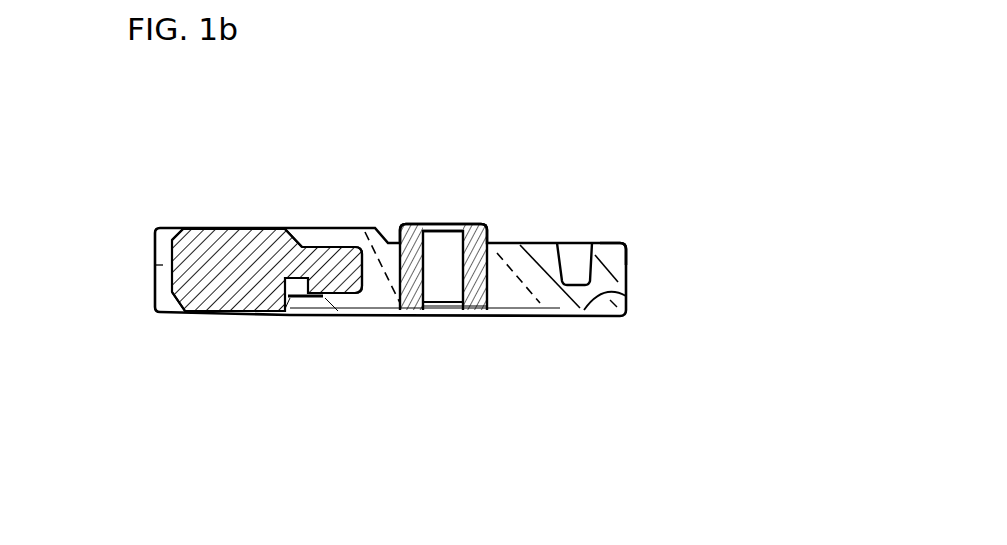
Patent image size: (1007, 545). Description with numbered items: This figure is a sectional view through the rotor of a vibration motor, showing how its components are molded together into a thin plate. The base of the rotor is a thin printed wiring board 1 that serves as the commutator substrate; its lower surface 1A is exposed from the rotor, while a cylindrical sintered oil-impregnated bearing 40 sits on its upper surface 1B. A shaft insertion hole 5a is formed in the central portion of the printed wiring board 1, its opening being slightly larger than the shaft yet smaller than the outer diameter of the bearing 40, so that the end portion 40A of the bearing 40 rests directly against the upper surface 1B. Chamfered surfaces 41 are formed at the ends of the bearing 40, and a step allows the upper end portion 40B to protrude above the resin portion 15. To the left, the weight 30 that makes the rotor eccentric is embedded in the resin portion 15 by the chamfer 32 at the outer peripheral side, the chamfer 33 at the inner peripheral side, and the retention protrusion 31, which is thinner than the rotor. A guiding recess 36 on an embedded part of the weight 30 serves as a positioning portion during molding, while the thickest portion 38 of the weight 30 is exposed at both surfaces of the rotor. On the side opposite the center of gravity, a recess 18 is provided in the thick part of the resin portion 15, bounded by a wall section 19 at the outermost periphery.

The printed wiring board 1 is at (600, 320).
The lower surface of the printed wiring board 1A is at (565, 313).
The upper surface of the printed wiring board 1B is at (624, 296).
The shaft insertion hole 5a is at (473, 313).
The resin portion 15 is at (515, 222).
The recess 18 is at (585, 252).
The wall section 19 is at (623, 247).
The weight 30 is at (233, 220).
The retention protrusion 31 is at (332, 220).
The chamfer 32 is at (177, 228).
The chamfer 33 is at (298, 216).
The guiding recess 36 is at (328, 313).
The thickest portion of the weight 38 is at (230, 313).
The bearing 40 is at (445, 224).
The end portion of the bearing 40A is at (420, 313).
The upper end portion of the bearing 40B is at (395, 222).
The chamfered surface 41 is at (487, 315).